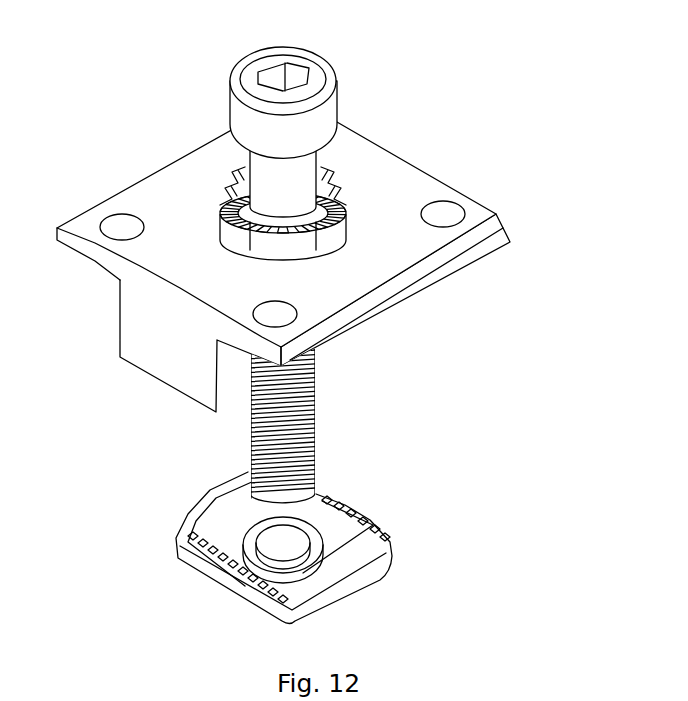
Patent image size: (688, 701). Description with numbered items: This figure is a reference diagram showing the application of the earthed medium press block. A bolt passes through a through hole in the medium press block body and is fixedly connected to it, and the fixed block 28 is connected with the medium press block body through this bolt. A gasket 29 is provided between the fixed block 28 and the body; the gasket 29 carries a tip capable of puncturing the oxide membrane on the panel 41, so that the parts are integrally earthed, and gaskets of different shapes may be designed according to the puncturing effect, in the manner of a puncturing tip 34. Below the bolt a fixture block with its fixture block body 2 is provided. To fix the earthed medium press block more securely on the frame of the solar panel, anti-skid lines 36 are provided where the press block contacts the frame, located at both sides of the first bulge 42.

The fixture block body 2 is at (363, 560).
The fixed block 28 is at (337, 95).
The gasket 29 is at (347, 218).
The puncturing tip 34 is at (270, 313).
The anti-skid line 36 is at (67, 257).
The panel 41 is at (402, 177).
The first bulge 42 is at (160, 363).